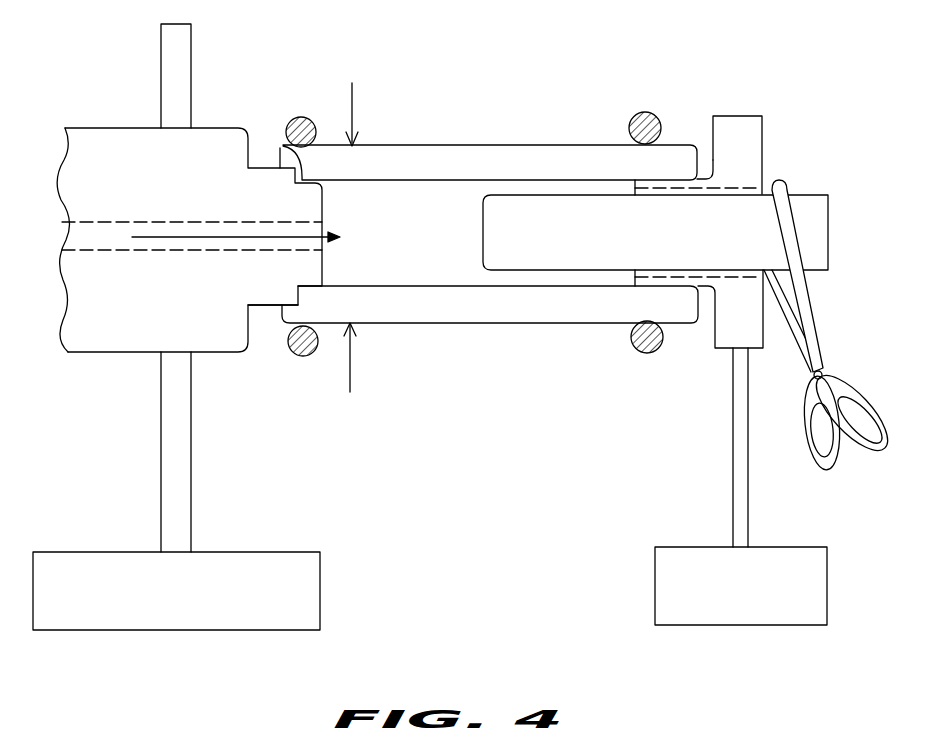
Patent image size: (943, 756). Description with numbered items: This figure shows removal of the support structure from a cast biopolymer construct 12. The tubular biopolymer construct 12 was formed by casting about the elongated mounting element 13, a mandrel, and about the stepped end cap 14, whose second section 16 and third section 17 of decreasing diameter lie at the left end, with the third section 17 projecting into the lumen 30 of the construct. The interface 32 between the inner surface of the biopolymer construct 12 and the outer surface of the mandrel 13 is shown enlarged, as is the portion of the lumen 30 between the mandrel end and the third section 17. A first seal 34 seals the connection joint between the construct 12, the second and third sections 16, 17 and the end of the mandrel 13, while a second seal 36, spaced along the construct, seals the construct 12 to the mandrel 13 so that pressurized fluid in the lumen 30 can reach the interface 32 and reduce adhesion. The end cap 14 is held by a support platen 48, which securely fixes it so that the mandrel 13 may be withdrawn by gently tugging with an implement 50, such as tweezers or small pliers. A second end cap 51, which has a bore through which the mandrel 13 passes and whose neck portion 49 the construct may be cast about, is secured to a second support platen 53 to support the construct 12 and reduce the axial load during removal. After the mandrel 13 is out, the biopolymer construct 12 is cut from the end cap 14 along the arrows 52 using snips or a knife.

The biopolymer construct 12 is at (481, 170).
The elongated mounting element 13 is at (585, 241).
The end cap 14 is at (168, 185).
The second section 16 is at (272, 305).
The third section 17 is at (280, 150).
The lumen 30 is at (425, 245).
The interface 32 is at (540, 192).
The first seal 34 is at (291, 117).
The second seal 36 is at (636, 113).
The support platen 48 is at (193, 440).
The neck portion 49 is at (700, 176).
The implement 50 is at (852, 390).
The second end cap 51 is at (748, 140).
The arrows 52 is at (350, 378).
The second support platen 53 is at (733, 493).